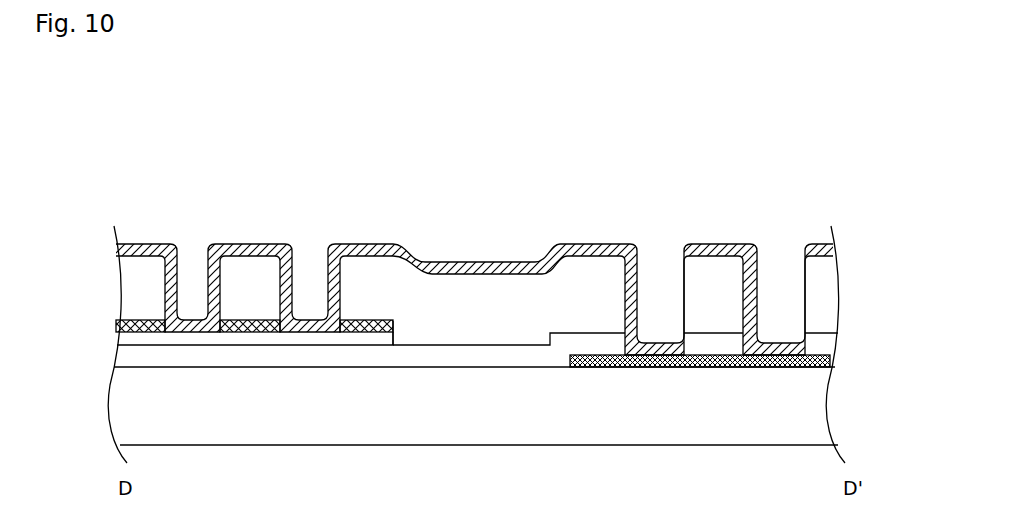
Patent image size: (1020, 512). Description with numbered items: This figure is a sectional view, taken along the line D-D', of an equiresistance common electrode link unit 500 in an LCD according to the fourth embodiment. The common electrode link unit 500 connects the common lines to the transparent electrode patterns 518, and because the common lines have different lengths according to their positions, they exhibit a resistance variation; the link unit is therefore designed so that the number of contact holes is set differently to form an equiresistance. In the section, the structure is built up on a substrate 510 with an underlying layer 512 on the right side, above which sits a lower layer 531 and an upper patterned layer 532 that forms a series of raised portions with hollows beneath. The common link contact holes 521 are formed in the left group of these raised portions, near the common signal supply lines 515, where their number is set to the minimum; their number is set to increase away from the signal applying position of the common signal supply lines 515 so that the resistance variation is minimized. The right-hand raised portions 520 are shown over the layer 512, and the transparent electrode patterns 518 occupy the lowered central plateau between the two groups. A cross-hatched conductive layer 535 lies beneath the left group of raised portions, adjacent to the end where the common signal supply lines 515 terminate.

The common electrode link unit 500 is at (542, 143).
The substrate 510 is at (488, 422).
The buffer / insulating layer 512 is at (828, 363).
The common signal supply lines 515 is at (377, 322).
The transparent electrode patterns 518 is at (457, 262).
The second protrusions 520 is at (648, 247).
The common link contact holes 521 is at (188, 243).
The planarization layer 531 is at (128, 357).
The pixel defining layer 532 is at (138, 288).
The pixel electrode 535 is at (127, 340).